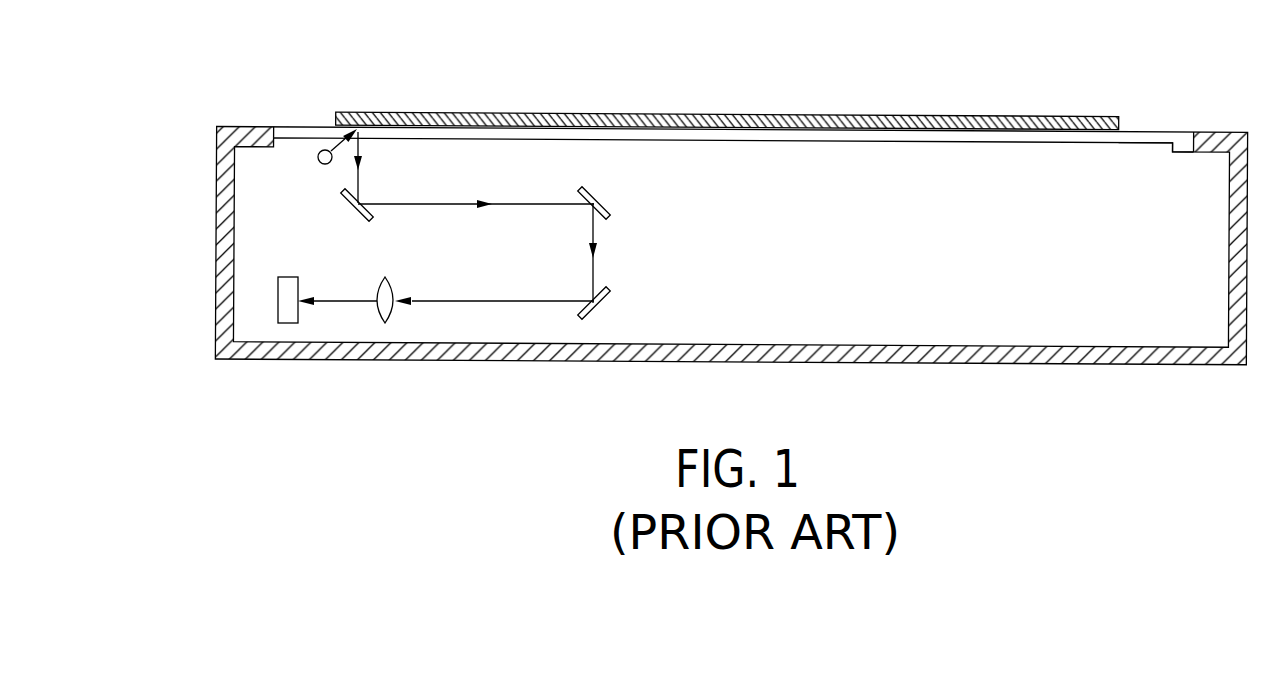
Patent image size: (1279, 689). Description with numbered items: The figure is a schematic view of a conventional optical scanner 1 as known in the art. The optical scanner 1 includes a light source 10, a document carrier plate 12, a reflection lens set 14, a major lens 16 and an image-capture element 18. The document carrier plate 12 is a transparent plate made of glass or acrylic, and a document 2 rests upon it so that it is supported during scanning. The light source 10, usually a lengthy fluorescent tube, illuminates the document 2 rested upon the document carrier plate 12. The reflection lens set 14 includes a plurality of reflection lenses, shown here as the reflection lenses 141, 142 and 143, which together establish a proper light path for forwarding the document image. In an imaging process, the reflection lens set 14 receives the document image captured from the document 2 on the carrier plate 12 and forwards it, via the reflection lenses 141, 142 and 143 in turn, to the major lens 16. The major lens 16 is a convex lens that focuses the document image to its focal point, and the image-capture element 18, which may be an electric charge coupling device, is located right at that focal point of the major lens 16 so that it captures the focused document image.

The optical scanner 1 is at (166, 335).
The document 2 is at (750, 116).
The light source 10 is at (323, 150).
The document carrier plate 12 is at (1152, 132).
The reflection lens set 14 is at (518, 229).
The reflection lens 141 is at (345, 199).
The reflection lens 142 is at (603, 206).
The reflection lens 143 is at (606, 306).
The major lens 16 is at (393, 285).
The image-capture element 18 is at (299, 279).